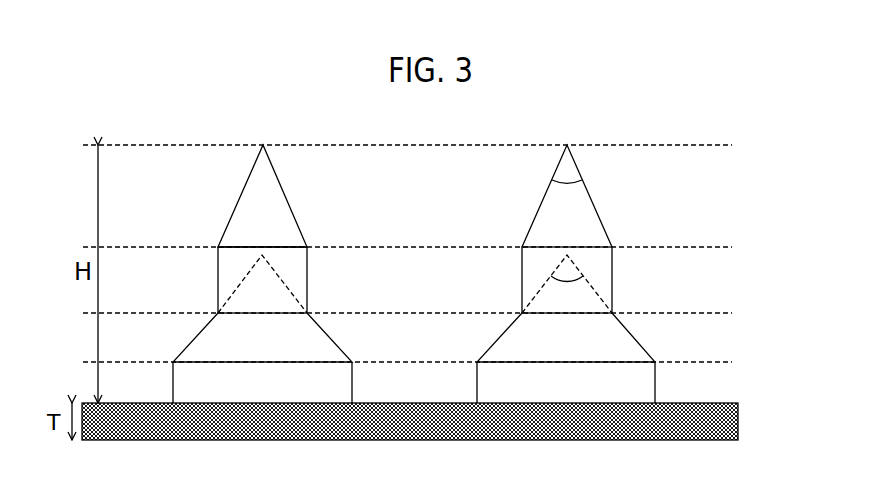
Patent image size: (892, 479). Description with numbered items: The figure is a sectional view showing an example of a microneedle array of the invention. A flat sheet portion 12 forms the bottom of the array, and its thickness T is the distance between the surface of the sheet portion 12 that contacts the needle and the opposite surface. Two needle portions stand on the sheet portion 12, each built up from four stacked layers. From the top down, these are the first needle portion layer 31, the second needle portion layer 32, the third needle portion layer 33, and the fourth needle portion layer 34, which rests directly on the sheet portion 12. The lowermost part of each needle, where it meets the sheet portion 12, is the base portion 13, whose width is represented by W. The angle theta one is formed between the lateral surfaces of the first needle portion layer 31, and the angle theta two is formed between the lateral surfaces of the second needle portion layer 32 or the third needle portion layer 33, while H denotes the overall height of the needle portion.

The sheet portion 12 is at (740, 418).
The base portion 13 is at (347, 393).
The first needle portion layer 31 is at (730, 145).
The second needle portion layer 32 is at (730, 247).
The third needle portion layer 33 is at (730, 313).
The fourth needle portion layer 34 is at (730, 362).